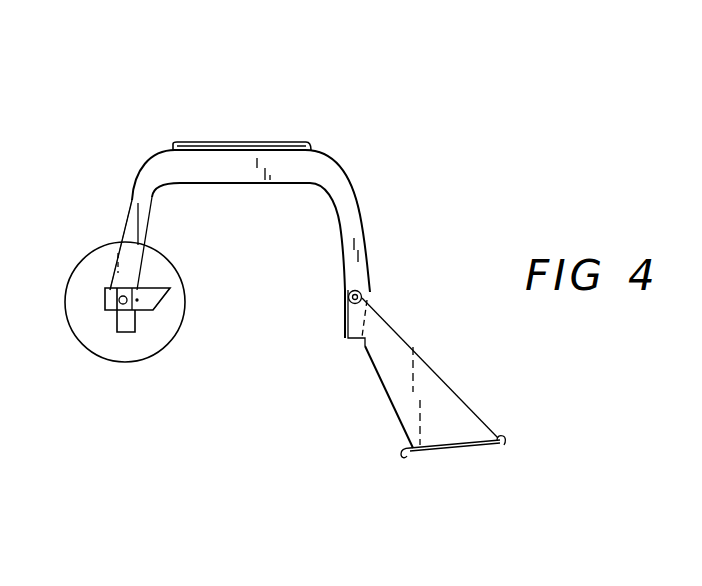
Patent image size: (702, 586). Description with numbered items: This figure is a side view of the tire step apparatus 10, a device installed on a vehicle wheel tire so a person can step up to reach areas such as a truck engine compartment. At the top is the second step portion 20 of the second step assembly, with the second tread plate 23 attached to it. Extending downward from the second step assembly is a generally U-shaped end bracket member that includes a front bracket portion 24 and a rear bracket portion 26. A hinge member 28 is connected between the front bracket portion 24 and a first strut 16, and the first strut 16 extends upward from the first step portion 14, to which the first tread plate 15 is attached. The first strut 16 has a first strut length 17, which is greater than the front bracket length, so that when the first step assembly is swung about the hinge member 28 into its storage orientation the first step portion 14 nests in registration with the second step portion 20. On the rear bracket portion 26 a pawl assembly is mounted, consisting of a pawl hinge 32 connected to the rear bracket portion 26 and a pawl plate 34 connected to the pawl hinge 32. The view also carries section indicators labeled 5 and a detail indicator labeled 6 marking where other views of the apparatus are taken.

The tire step apparatus 10 is at (353, 117).
The second step portion 20 is at (235, 160).
The second tread plate 23 is at (193, 141).
The front bracket portion 24 is at (300, 150).
The rear bracket portion 26 is at (127, 210).
The hinge member 28 is at (422, 347).
The pawl hinge 32 is at (112, 287).
The pawl plate 34 is at (155, 305).
The first strut 16 is at (430, 390).
The first strut length 17 is at (393, 448).
The first step portion 14 is at (500, 437).
The first tread plate 15 is at (507, 441).
The section line 5- 5 is at (455, 98).
The detail view 6 indicator 6 is at (100, 360).